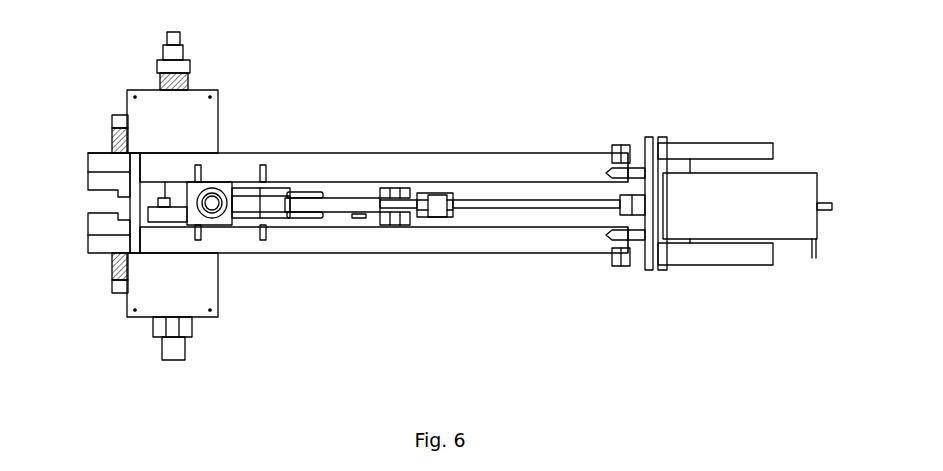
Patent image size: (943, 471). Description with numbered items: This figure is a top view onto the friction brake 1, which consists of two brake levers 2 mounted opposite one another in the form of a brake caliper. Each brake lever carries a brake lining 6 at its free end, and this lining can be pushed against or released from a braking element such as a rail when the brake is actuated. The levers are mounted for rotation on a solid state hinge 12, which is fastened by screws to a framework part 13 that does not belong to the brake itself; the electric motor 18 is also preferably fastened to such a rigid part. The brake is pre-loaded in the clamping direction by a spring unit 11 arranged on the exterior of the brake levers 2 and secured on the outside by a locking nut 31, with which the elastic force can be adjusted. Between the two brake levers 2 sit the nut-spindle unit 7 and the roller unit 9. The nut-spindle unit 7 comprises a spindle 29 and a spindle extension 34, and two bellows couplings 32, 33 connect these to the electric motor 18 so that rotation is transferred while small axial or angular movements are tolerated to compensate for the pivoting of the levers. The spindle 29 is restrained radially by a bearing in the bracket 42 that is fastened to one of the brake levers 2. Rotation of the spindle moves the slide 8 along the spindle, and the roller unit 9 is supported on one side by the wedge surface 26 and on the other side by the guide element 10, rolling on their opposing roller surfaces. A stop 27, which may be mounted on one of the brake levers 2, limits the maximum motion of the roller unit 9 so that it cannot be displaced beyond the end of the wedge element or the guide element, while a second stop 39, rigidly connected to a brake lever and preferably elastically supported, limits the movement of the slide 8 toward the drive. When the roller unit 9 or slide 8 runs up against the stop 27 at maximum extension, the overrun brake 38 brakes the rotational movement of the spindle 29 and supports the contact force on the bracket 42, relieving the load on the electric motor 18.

The friction brake 1 is at (488, 115).
The brake levers 2 is at (353, 167).
The brake lining 6 is at (100, 223).
The nut-spindle unit 7 is at (309, 236).
The slide 8 is at (252, 185).
The roller unit 9 is at (222, 232).
The guide element 10 is at (238, 225).
The spring unit 11 is at (140, 270).
The solid state hinge 12 is at (637, 157).
The framework part 13 is at (683, 147).
The electric motor 18 is at (765, 205).
The wedge surface 26 is at (237, 183).
The stop 27 is at (187, 226).
The spindle 29 is at (338, 205).
The locking nut 31 is at (177, 330).
The bellows coupling 32 is at (437, 218).
The bellows coupling 33 is at (632, 207).
The spindle extension 34 is at (507, 222).
The overrun brake 38 is at (414, 170).
The second stop 39 is at (377, 226).
The bracket 42 is at (398, 232).